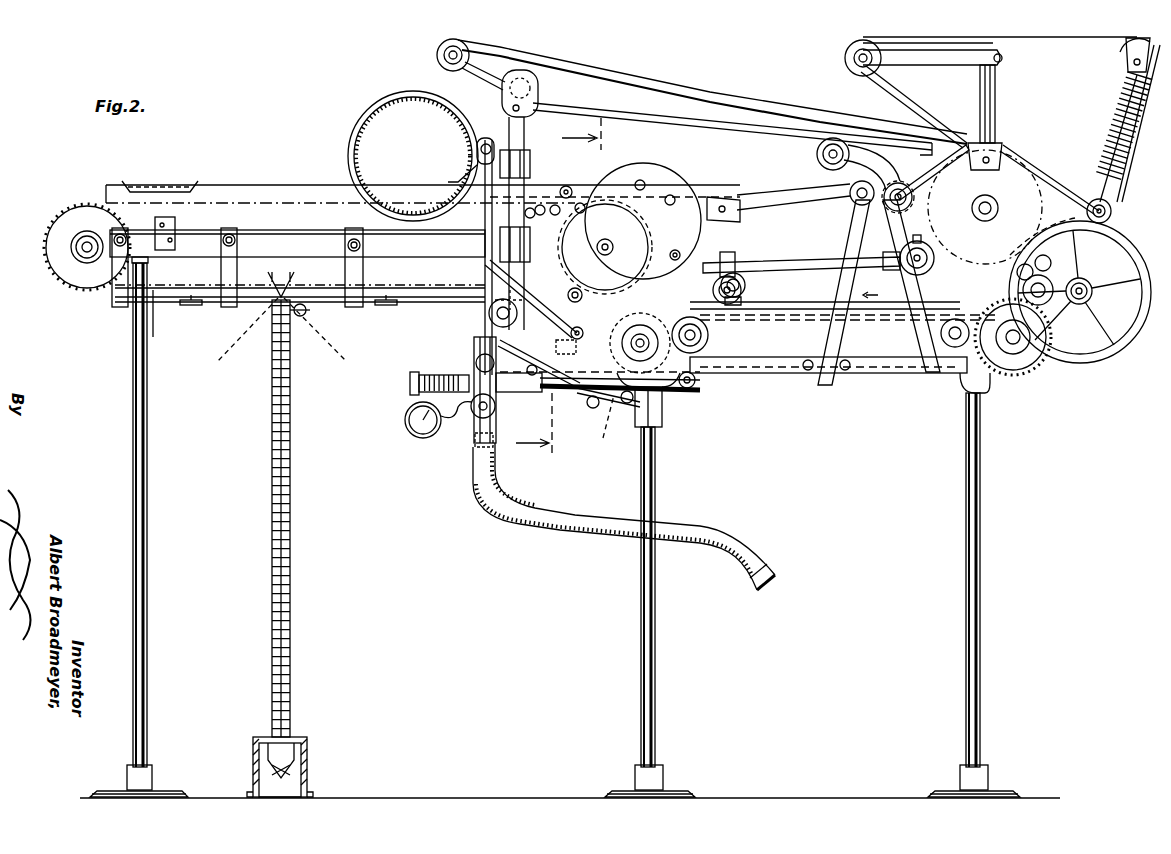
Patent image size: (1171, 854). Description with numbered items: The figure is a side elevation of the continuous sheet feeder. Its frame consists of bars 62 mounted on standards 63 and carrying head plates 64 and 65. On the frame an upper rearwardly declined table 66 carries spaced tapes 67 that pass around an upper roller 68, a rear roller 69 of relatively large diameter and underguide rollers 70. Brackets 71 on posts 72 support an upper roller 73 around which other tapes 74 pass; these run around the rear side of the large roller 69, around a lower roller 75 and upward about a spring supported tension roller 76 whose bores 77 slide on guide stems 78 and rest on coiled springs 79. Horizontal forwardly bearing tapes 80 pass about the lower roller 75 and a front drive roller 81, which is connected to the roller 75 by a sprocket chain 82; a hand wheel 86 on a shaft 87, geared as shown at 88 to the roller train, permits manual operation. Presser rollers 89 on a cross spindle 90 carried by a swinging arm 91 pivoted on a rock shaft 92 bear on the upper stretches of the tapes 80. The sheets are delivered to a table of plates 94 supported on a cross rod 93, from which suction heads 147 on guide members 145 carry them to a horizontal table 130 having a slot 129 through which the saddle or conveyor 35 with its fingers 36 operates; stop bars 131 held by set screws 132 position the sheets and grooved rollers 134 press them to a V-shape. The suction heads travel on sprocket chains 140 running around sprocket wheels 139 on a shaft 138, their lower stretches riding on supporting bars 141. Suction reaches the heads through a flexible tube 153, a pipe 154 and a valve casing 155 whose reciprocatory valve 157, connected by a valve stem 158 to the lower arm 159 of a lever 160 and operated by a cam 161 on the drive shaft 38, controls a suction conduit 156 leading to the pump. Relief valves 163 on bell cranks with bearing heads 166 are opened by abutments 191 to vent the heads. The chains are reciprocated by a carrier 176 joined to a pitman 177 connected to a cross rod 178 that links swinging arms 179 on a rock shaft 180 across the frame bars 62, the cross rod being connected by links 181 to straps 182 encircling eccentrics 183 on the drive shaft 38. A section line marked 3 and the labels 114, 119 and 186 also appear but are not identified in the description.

The abutments 191 is at (176, 181).
The sprocket wheels 139 is at (58, 222).
The shaft 138 is at (72, 252).
The sprocket chains 140 is at (303, 200).
The stop bars 131 is at (185, 292).
The set screws 132 is at (190, 306).
The supporting bars 141 is at (154, 320).
The horizontal table 130 is at (448, 298).
The slot 129 is at (272, 300).
The grooved rollers 134 is at (278, 280).
The fingers 36 is at (307, 312).
The saddle or conveyor 35 is at (291, 330).
The flexible tube 153 is at (410, 212).
The pipe 154 is at (484, 265).
The valves 163 is at (533, 200).
The bearing heads 166 is at (566, 186).
The pin 186 is at (582, 202).
The eccentrics 183 is at (646, 165).
The straps 182 is at (682, 185).
The drive shaft 38 is at (615, 262).
The guide members 145 is at (605, 240).
The cam 161 is at (660, 262).
The carrier 176 is at (745, 198).
The links 181 is at (800, 204).
The pitman 177 is at (803, 191).
The cross rod 178 is at (868, 182).
The underguide rollers 70 is at (816, 155).
The rear roller 69 is at (926, 145).
The tapes 74 is at (945, 122).
The upper roller 73 is at (847, 50).
The brackets 71 is at (928, 60).
The guide stems 78 is at (1132, 36).
The posts 72 is at (995, 86).
The tension roller 76 is at (1124, 56).
The bores 77 is at (1127, 66).
The coiled springs 79 is at (1116, 122).
The head plate 64 is at (1058, 188).
The table 66 is at (703, 92).
The tapes 67 is at (780, 128).
The upper roller 68 is at (437, 52).
The swinging arm 91 is at (790, 262).
The swinging arms 179 is at (860, 258).
The rock shaft 92 is at (925, 273).
The presser rollers 89 is at (745, 288).
The cross spindle 90 is at (743, 305).
The tapes 80 is at (818, 296).
The sprocket chain 82 is at (875, 312).
The lever 160 is at (715, 290).
The lower arm 159 is at (708, 338).
The front roller 81 is at (690, 395).
The frame bars 62 is at (768, 378).
The rock shaft 180 is at (835, 390).
The standards 63 is at (656, 486).
The valve stem 158 is at (672, 400).
The head plate 65 is at (598, 402).
The line 119 is at (608, 425).
The plates 94 is at (507, 322).
The cross rod 93 is at (555, 344).
The suction heads 147 is at (494, 300).
The lever 114 is at (538, 364).
The valve casing 155 is at (476, 370).
The valve 157 is at (500, 402).
The suction conduit 156 is at (580, 507).
The lower roller 75 is at (1014, 380).
The hand wheel 86 is at (1100, 360).
The shaft 87 is at (1093, 294).
The gearing 88 is at (1048, 278).
The section line 3 is at (559, 295).